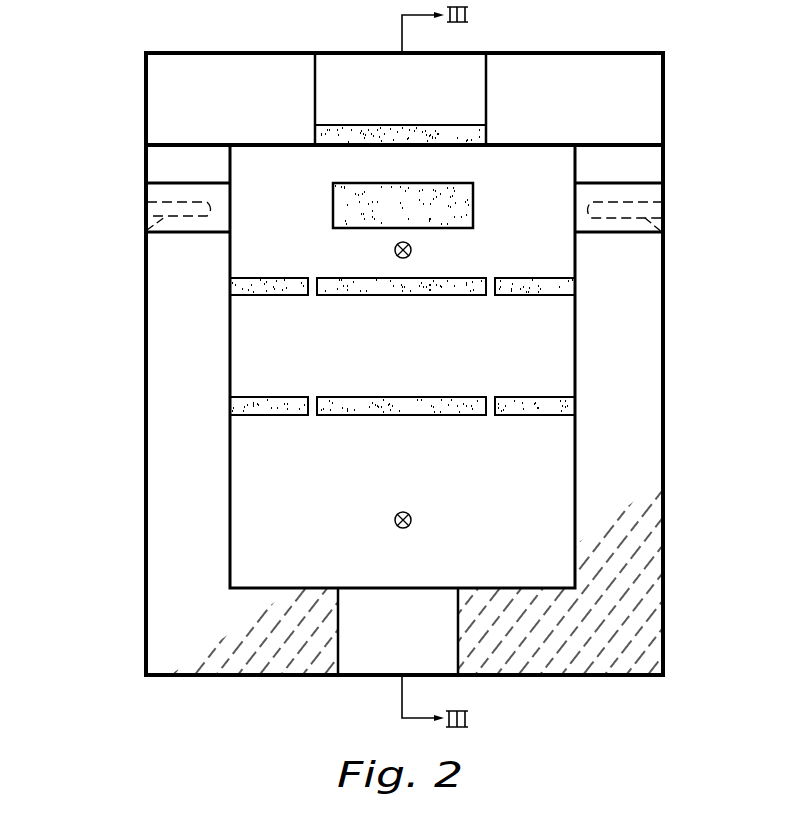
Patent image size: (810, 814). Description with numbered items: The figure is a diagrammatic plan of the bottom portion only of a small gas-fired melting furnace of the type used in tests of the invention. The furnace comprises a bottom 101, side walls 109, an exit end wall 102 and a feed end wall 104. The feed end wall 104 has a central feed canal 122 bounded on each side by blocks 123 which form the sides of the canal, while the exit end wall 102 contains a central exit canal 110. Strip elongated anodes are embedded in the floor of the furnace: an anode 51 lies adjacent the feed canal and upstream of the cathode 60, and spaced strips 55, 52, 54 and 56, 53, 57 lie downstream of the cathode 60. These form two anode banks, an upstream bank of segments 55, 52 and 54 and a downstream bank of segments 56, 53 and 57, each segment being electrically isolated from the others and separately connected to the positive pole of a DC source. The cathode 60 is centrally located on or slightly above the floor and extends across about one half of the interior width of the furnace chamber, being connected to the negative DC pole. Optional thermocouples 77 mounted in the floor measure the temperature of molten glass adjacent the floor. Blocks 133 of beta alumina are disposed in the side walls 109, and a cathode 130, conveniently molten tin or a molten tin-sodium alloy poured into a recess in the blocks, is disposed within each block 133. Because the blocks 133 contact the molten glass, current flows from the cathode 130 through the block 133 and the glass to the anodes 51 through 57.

The anode 51 is at (448, 133).
The anode segment 52 is at (370, 290).
The anode segment 53 is at (378, 414).
The anode segment 54 is at (510, 292).
The anode segment 55 is at (255, 290).
The anode segment 56 is at (258, 412).
The anode segment 57 is at (510, 414).
The cathode 60 is at (340, 205).
The thermocouple 77 is at (413, 250).
The bottom 101 is at (505, 566).
The exit end wall 102 is at (665, 405).
The feed end wall 104 is at (513, 53).
The side wall 109 is at (200, 485).
The exit canal 110 is at (410, 631).
The feed canal 122 is at (421, 93).
The block 123 is at (246, 93).
The cathode 130 is at (146, 232).
The block of beta alumina 133 is at (165, 193).